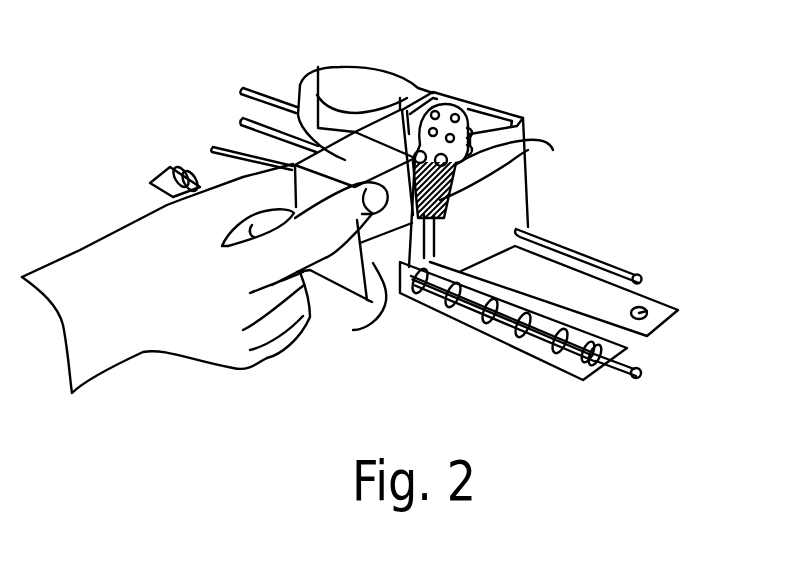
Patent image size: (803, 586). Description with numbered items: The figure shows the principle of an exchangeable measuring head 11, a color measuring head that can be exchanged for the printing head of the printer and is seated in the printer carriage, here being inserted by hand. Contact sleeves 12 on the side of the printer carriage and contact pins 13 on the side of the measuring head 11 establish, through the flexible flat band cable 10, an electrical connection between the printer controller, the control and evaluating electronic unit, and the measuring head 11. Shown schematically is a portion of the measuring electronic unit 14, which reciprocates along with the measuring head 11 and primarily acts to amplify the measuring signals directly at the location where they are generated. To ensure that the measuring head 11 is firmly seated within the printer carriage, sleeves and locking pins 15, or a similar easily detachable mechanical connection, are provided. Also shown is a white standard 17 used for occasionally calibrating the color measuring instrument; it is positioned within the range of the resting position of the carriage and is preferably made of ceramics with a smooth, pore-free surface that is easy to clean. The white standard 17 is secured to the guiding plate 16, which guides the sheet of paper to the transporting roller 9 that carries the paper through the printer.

The transporting roller 9 is at (503, 335).
The flexible flat band cable 10 is at (360, 82).
The measuring head 11 is at (340, 306).
The contact sleeves 12 is at (458, 116).
The contact pins 13 is at (467, 48).
The measuring electronic unit 14 is at (316, 67).
The sleeves and locking pins 15 is at (553, 150).
The guiding plate 16 is at (582, 293).
The white standard 17 is at (645, 313).